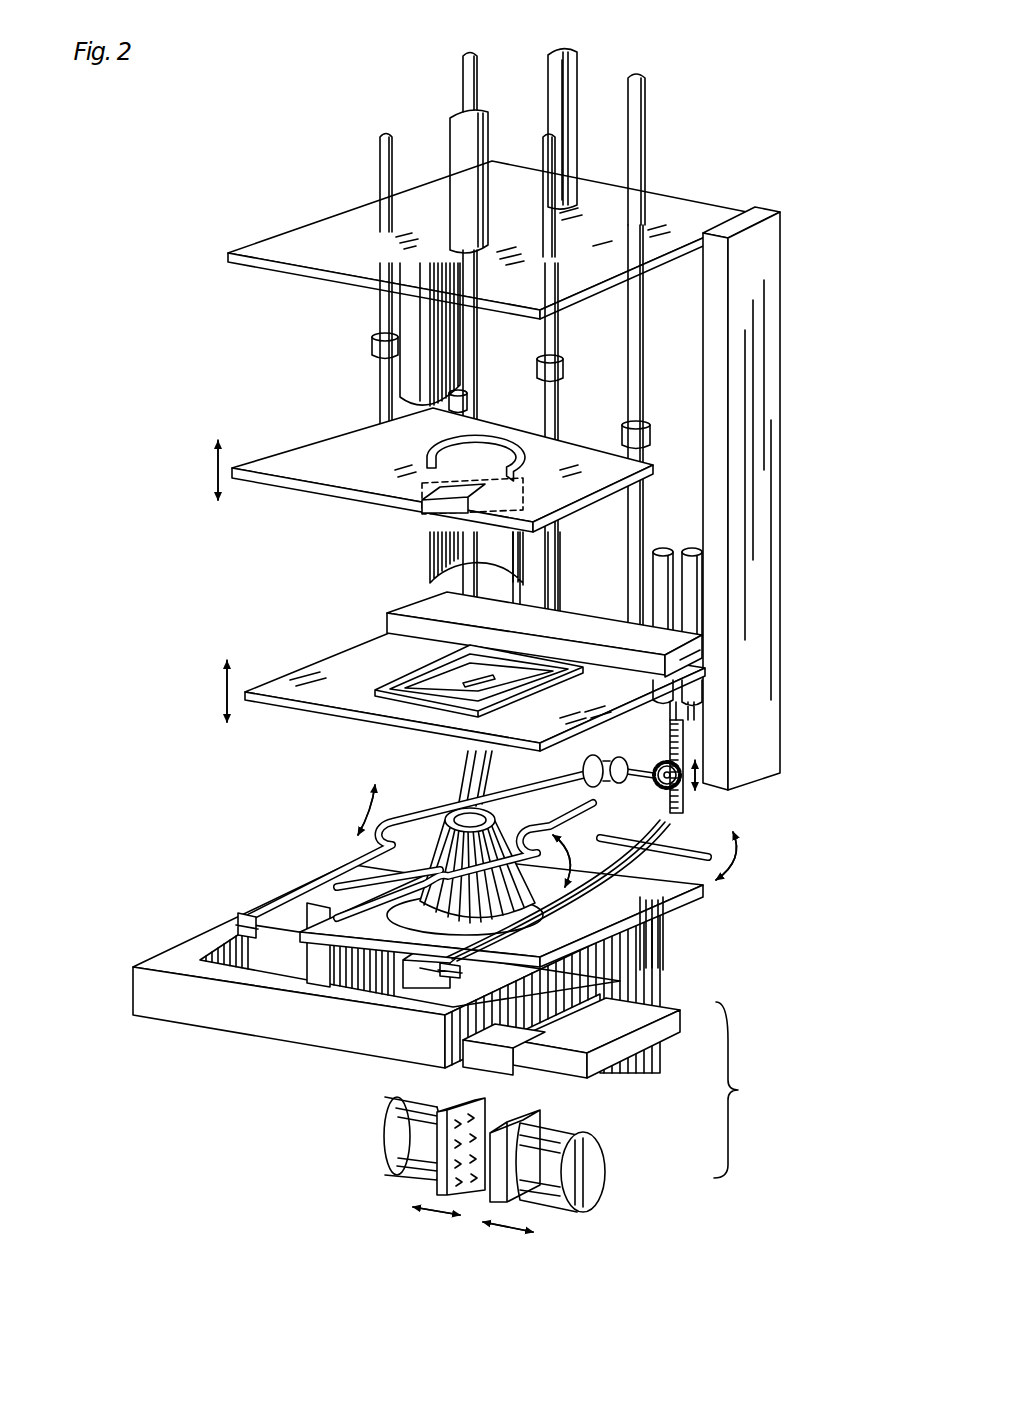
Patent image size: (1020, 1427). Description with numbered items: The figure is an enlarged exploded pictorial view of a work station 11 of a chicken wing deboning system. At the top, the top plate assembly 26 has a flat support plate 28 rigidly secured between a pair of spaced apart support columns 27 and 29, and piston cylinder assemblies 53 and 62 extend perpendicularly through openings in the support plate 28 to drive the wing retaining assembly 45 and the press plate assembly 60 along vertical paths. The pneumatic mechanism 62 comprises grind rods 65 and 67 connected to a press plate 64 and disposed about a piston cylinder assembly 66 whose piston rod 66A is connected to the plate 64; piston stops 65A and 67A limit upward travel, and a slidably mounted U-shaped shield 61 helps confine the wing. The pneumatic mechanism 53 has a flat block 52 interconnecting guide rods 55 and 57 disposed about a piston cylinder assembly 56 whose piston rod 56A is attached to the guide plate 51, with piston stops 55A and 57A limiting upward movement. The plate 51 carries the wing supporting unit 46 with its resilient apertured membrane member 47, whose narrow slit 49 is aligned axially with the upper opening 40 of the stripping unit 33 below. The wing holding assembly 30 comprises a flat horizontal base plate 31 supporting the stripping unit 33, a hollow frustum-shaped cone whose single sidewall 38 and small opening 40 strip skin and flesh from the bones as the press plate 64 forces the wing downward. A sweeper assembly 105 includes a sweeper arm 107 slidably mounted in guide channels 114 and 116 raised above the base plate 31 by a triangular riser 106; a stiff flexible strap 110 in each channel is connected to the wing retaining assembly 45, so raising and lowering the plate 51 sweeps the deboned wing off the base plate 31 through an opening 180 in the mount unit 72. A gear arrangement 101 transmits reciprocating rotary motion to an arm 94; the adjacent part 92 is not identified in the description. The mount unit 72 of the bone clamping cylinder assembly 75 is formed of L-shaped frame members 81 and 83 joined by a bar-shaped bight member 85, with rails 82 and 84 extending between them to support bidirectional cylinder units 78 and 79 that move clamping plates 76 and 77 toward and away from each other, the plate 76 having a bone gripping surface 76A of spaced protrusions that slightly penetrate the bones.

The work station 11 is at (190, 234).
The top plate assembly 26 is at (716, 190).
The support column 27 is at (768, 376).
The support plate 28 is at (676, 195).
The support column 29 is at (405, 366).
The wing holding assembly 30 is at (300, 832).
The base plate 31 is at (670, 914).
The stripping unit 33 is at (492, 797).
The sidewall 38 is at (406, 960).
The upper circular opening 40 is at (468, 790).
The wing retaining assembly 45 is at (256, 656).
The wing supporting unit 46 is at (390, 678).
The resilient membrane member 47 is at (592, 650).
The slit 49 is at (456, 676).
The guide plate 51 is at (280, 700).
The block 52 is at (700, 652).
The piston cylinder assembly 53 is at (586, 86).
The guide rod 55 is at (470, 56).
The piston stop 55A is at (449, 405).
The piston cylinder assembly 56 is at (577, 62).
The piston rod 56A is at (530, 552).
The guide rod 57 is at (650, 93).
The piston stop 57A is at (662, 432).
The press plate assembly 60 is at (252, 447).
The U-shaped shield 61 is at (436, 566).
The pneumatic mechanism 62 is at (442, 130).
The press plate 64 is at (300, 488).
The grind rod 65 is at (378, 170).
The piston stop 65A is at (378, 340).
The piston cylinder assembly 66 is at (452, 120).
The piston rod 66A is at (430, 441).
The grind rod 67 is at (548, 133).
The piston stop 67A is at (566, 365).
The mount unit 72 is at (668, 959).
The bone clamping cylinder assembly 75 is at (550, 1214).
The clamping plate 76 is at (440, 1186).
The bone gripping surface 76A is at (470, 1172).
The clamping plate 77 is at (530, 1112).
The bidirectional cylinder unit 78 is at (388, 1142).
The bidirectional cylinder unit 79 is at (582, 1180).
The L-shaped frame member 81 is at (640, 1038).
The rail 82 is at (542, 1062).
The L-shaped frame member 83 is at (296, 965).
The rail 84 is at (724, 1002).
The bight member 85 is at (136, 986).
The arm 92 is at (338, 900).
The arm 94 is at (410, 803).
The gear arrangement 101 is at (690, 742).
The sweeper assembly 105 is at (748, 857).
The riser 106 is at (680, 912).
The sweeper arm 107 is at (690, 842).
The strap 110 is at (700, 812).
The guide channel 114 is at (456, 985).
The guide channel 116 is at (244, 920).
The opening 180 is at (425, 975).